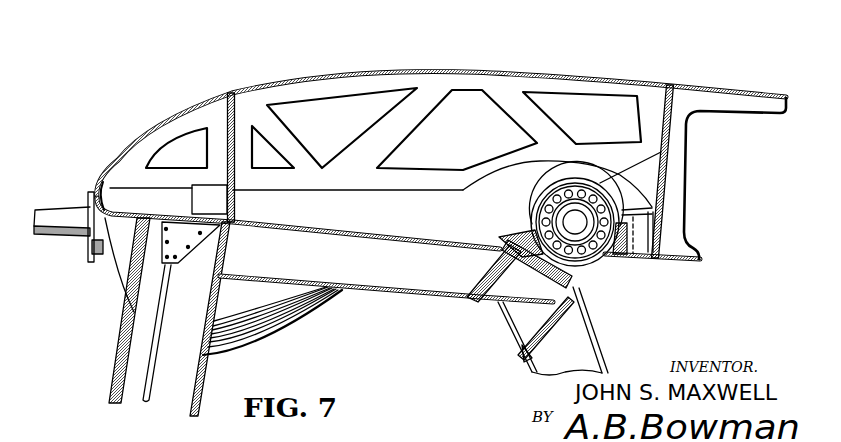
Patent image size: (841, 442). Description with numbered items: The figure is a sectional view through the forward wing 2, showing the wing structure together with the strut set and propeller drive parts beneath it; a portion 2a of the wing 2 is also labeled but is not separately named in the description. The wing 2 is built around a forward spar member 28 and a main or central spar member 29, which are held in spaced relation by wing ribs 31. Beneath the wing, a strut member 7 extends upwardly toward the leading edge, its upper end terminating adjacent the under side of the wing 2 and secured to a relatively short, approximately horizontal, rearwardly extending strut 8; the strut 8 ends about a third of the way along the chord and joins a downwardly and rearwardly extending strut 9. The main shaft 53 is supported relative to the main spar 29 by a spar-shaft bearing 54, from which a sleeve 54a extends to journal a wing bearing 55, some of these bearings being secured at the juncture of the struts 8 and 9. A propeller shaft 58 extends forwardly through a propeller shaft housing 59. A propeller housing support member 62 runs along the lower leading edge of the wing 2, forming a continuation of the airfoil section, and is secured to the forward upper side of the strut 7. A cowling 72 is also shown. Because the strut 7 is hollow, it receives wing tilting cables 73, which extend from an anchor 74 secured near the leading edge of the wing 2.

The forward wing 2 is at (521, 73).
The inner skin / web 2a is at (282, 198).
The strut member 7 is at (123, 357).
The strut 8 is at (415, 273).
The strut 9 is at (588, 358).
The forward spar member 28 is at (229, 80).
The main or central spar member 29 is at (696, 70).
The wing ribs 31 is at (435, 84).
The main shaft 53 is at (578, 250).
The spar-shaft bearing 54 is at (630, 200).
The sleeve 54a is at (584, 243).
The wing bearing 55 is at (612, 256).
The propeller shaft 58 is at (68, 223).
The propeller shaft housing 59 is at (97, 245).
The propeller housing support member 62 is at (100, 190).
The cowling 72 is at (113, 268).
The wing tilting cables 73 is at (150, 372).
The anchor 74 is at (165, 244).